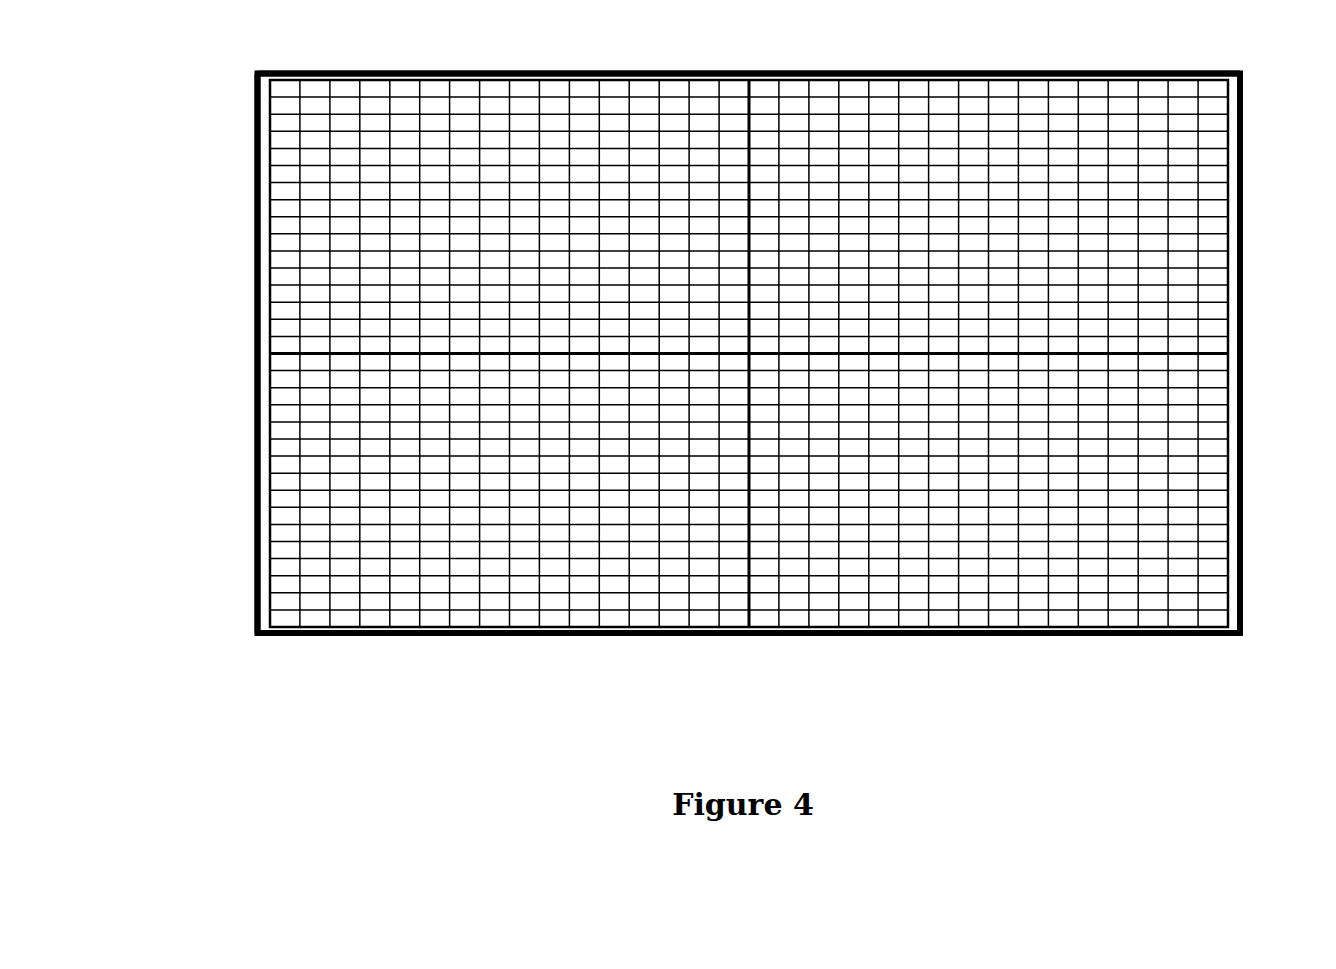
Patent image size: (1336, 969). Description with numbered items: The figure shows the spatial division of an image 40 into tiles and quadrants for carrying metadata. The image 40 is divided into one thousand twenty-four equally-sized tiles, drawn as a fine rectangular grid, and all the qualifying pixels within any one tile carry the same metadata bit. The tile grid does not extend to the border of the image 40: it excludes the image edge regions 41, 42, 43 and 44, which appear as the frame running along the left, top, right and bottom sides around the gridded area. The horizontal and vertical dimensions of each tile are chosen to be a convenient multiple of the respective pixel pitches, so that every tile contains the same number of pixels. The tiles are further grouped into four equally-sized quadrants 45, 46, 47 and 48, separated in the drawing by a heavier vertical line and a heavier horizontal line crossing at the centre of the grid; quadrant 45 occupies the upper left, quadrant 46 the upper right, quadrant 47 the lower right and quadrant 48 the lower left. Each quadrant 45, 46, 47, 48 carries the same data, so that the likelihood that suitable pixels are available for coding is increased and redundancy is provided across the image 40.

The image 40 is at (256, 638).
The image edge region 41 is at (264, 457).
The image edge region 42 is at (351, 74).
The image edge region 43 is at (1235, 170).
The image edge region 44 is at (1065, 634).
The quadrant 45 is at (468, 228).
The quadrant 46 is at (972, 213).
The quadrant 47 is at (915, 482).
The quadrant 48 is at (580, 480).